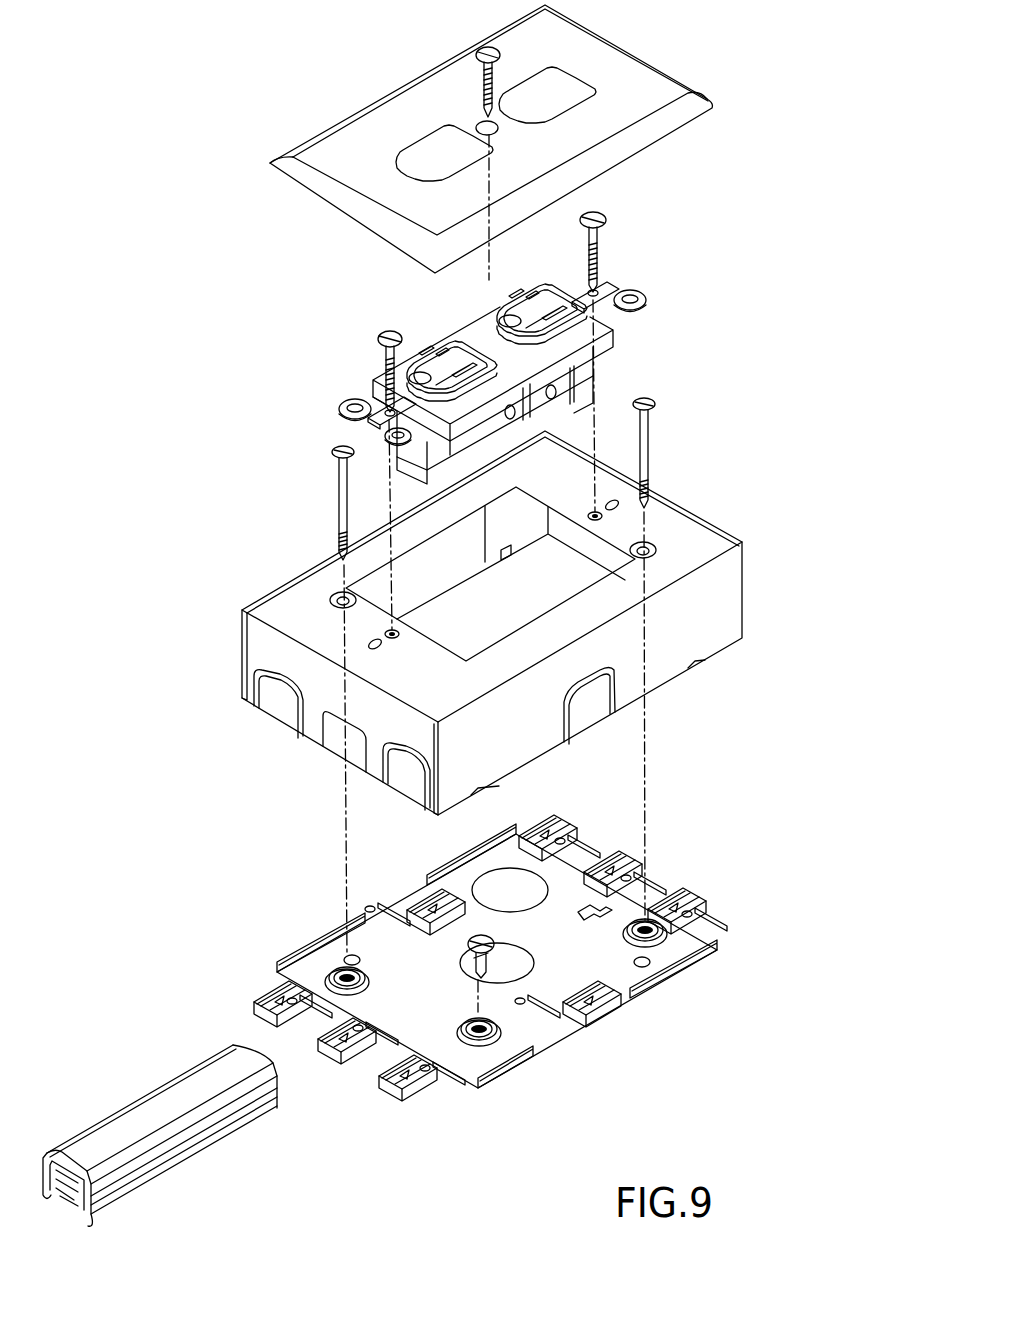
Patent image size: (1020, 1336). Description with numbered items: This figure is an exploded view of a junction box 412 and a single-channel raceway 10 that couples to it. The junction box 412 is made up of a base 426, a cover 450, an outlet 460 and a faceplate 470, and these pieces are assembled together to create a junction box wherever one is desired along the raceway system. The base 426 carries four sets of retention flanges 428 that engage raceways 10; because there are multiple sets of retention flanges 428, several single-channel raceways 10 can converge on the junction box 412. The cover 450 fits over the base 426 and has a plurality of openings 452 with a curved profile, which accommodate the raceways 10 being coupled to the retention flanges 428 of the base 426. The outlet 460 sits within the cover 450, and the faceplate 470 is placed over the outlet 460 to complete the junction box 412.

The raceway 10 is at (184, 1057).
The junction box 412 is at (680, 490).
The base 426 is at (663, 955).
The retention flanges 428 is at (393, 910).
The cover 450 is at (747, 583).
The openings 452 is at (240, 692).
The outlet 460 is at (613, 339).
The faceplate 470 is at (640, 101).